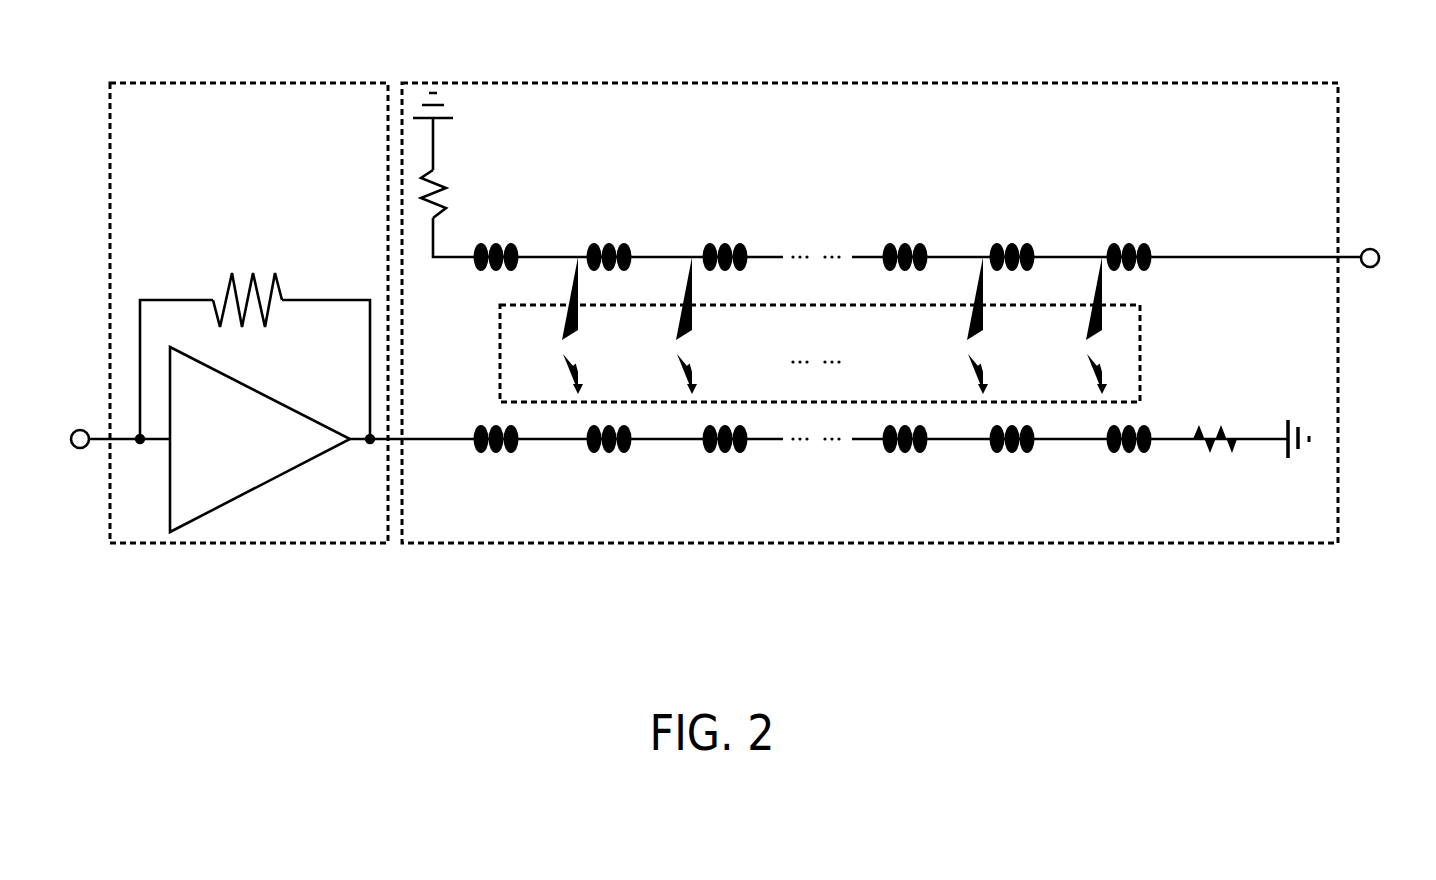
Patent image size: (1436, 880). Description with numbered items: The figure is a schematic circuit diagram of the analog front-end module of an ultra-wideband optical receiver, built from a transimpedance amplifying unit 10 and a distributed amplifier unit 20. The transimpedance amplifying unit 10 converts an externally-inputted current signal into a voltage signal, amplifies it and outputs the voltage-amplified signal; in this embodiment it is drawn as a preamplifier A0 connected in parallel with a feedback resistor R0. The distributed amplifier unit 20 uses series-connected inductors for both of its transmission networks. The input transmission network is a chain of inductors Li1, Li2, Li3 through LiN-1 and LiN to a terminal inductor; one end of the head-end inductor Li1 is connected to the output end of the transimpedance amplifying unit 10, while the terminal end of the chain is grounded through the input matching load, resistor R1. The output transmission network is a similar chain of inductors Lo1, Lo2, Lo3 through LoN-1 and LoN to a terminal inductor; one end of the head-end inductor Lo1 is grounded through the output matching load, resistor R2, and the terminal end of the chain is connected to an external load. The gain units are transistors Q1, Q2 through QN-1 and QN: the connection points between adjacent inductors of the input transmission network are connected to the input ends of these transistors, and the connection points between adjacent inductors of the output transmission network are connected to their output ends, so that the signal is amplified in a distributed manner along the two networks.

The transimpedance amplifying unit 10 is at (260, 98).
The distributed amplifier unit 20 is at (800, 99).
The preamplifier A0 is at (260, 439).
The feedback resistor R0 is at (247, 285).
The resistor (input matching load) R1 is at (1215, 454).
The resistor (output matching load) R2 is at (453, 194).
The transistor Q1 is at (580, 348).
The transistor Q2 is at (694, 348).
The transistor QN-1 is at (993, 348).
The transistor QN is at (1101, 348).
The inductor Lo1 is at (507, 244).
The inductor Lo2 is at (617, 244).
The inductor Lo3 is at (733, 244).
The inductor LoN-1 is at (918, 242).
The inductor LoN is at (1020, 242).
The inductor Li1 is at (496, 454).
The inductor Li2 is at (609, 454).
The inductor Li3 is at (725, 454).
The inductor LiN-1 is at (898, 455).
The inductor LiN is at (1012, 455).